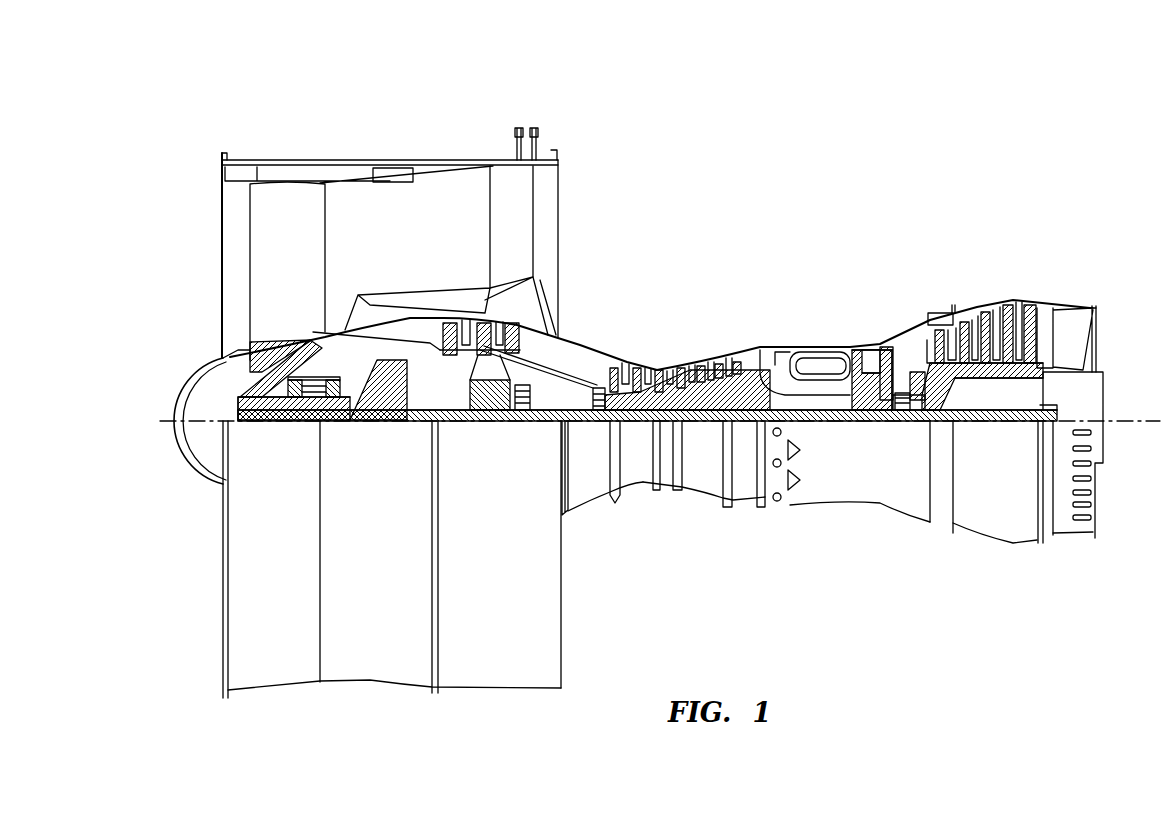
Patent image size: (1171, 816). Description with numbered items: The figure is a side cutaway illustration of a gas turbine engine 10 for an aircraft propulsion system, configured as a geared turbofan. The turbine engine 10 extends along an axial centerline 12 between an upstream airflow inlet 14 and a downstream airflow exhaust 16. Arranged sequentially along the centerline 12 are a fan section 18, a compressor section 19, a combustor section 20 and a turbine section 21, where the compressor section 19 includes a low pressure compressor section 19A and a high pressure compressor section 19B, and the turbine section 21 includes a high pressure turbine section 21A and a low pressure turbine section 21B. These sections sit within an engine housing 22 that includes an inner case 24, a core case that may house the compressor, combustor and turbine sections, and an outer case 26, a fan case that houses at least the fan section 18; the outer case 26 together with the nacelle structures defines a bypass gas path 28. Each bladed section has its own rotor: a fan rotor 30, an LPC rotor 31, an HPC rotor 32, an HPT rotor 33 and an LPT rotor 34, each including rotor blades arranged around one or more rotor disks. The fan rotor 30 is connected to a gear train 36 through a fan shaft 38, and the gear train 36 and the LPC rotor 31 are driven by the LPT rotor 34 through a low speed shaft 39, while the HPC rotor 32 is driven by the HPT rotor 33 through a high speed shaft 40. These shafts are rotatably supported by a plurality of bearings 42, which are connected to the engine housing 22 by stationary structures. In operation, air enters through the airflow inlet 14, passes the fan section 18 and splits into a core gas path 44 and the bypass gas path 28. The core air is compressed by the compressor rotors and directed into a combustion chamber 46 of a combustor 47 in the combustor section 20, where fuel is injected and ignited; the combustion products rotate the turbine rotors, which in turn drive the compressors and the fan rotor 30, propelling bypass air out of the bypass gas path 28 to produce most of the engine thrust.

The gas turbine engine 10 is at (196, 146).
The axial centerline 12 is at (1145, 428).
The upstream airflow inlet 14 is at (222, 222).
The downstream airflow exhaust 16 is at (1097, 335).
The fan section 18 is at (375, 411).
The compressor section 19 is at (717, 254).
The low pressure compressor (LPC) section 19A is at (560, 130).
The high pressure compressor (HPC) section 19B is at (676, 353).
The combustor section 20 is at (805, 318).
The turbine section 21 is at (967, 360).
The high pressure turbine (HPT) section 21A is at (878, 359).
The low pressure turbine (LPT) section 21B is at (1012, 391).
The engine housing 22 is at (573, 513).
The inner case 24 is at (745, 510).
The outer case 26 is at (506, 690).
The bypass gas path 28 is at (412, 234).
The fan rotor 30 is at (232, 357).
The LPC rotor 31 is at (487, 380).
The HPC rotor 32 is at (697, 385).
The HPT rotor 33 is at (880, 422).
The LPT rotor 34 is at (988, 381).
The gear train 36 is at (395, 421).
The fan shaft 38 is at (282, 421).
The low speed shaft 39 is at (995, 424).
The high speed shaft 40 is at (815, 412).
The bearings 42 is at (305, 400).
The core gas path 44 is at (578, 361).
The combustion chamber 46 is at (808, 366).
The combustor 47 is at (832, 346).